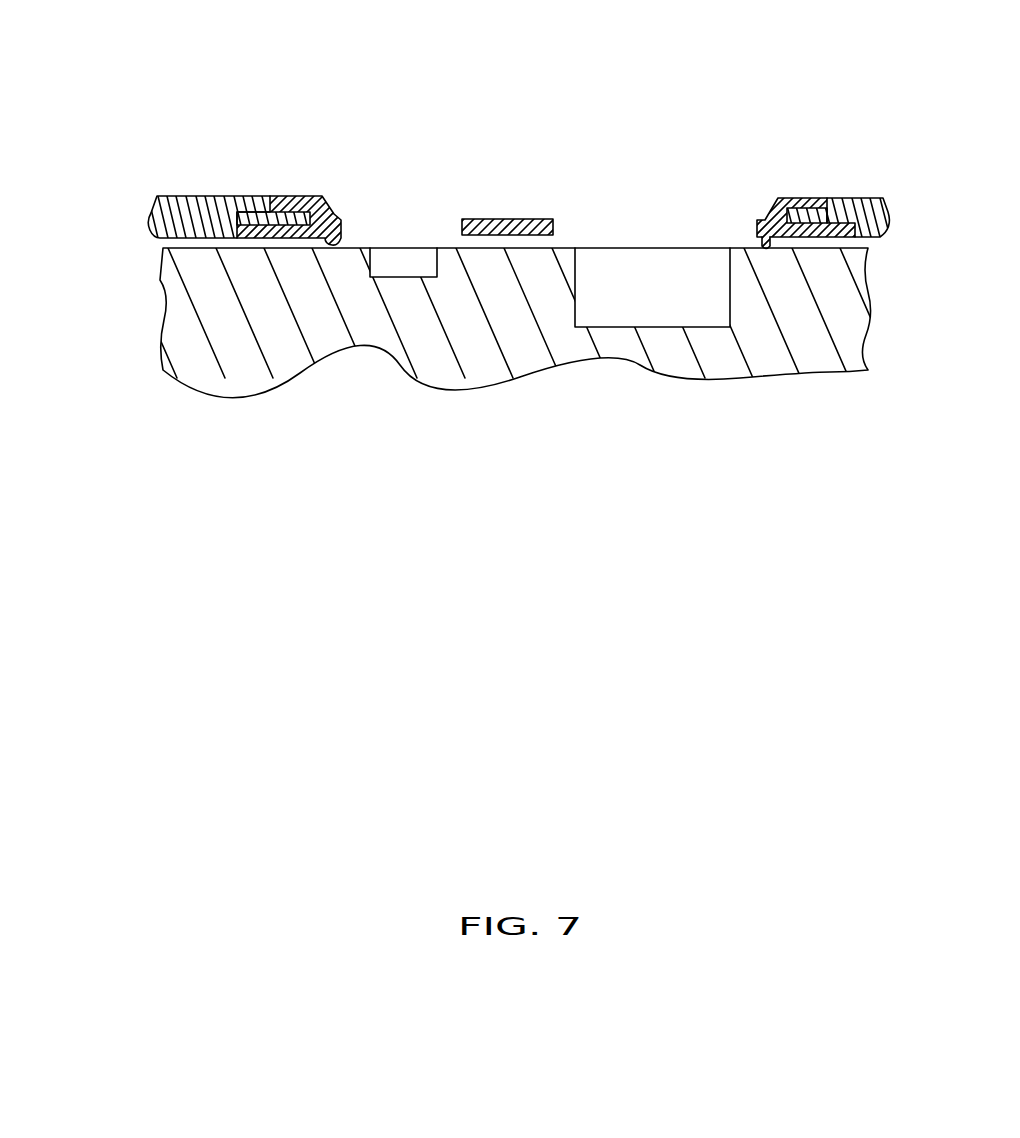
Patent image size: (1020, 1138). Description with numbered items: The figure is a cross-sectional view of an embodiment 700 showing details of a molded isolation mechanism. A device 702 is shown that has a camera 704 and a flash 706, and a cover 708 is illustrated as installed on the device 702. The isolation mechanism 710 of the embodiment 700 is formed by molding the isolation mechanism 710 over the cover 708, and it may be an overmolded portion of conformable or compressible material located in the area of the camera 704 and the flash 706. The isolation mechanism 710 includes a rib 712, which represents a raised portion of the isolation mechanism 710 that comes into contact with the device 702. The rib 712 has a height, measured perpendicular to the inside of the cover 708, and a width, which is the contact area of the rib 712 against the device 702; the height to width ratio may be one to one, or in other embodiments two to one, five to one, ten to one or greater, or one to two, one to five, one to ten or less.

The embodiment 700 is at (484, 388).
The device 702 is at (484, 383).
The camera 704 is at (685, 302).
The flash 706 is at (387, 263).
The cover 708 is at (856, 197).
The isolation mechanism 710 is at (537, 127).
The rib 712 is at (700, 201).